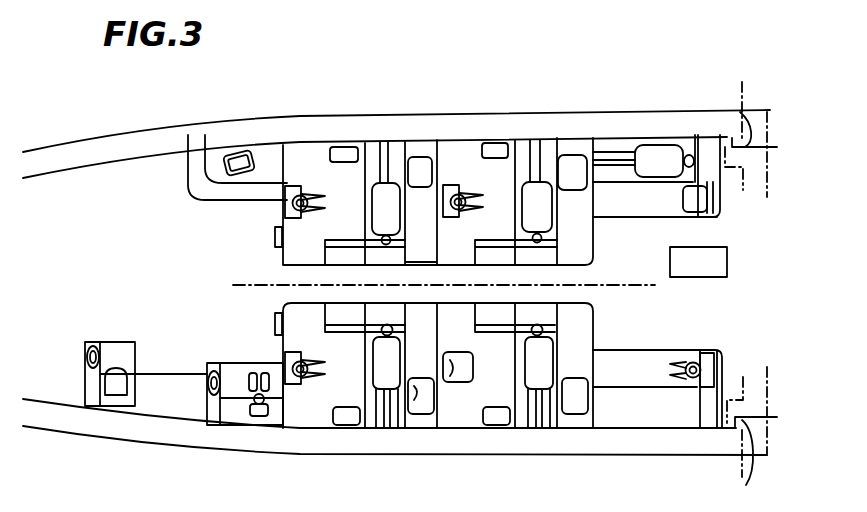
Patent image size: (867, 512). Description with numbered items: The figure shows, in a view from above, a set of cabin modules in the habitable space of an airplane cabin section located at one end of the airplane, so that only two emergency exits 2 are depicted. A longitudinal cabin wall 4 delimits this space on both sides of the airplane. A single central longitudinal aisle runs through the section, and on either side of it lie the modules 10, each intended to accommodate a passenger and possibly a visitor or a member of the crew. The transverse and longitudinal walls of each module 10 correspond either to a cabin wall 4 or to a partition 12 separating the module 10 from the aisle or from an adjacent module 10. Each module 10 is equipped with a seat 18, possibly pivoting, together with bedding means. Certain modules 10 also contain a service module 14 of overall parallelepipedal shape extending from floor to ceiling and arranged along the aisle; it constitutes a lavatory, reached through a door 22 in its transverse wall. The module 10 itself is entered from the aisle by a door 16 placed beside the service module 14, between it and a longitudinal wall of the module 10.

The emergency exit 2 is at (742, 112).
The longitudinal cabin wall 4 is at (415, 147).
The module 10 is at (313, 155).
The partition 12 is at (365, 226).
The service module 14 is at (358, 257).
The door 16 is at (427, 262).
The seat 18 is at (284, 209).
The door 22 is at (325, 258).